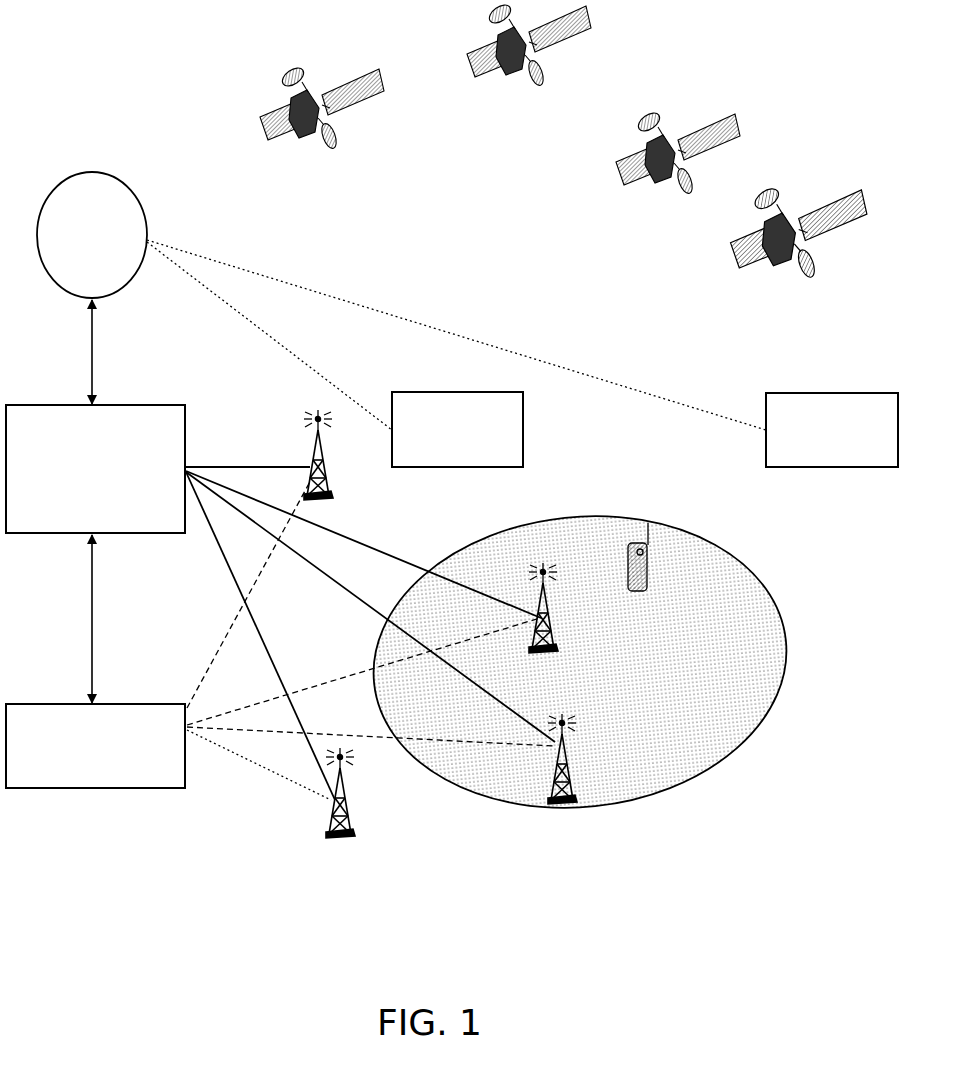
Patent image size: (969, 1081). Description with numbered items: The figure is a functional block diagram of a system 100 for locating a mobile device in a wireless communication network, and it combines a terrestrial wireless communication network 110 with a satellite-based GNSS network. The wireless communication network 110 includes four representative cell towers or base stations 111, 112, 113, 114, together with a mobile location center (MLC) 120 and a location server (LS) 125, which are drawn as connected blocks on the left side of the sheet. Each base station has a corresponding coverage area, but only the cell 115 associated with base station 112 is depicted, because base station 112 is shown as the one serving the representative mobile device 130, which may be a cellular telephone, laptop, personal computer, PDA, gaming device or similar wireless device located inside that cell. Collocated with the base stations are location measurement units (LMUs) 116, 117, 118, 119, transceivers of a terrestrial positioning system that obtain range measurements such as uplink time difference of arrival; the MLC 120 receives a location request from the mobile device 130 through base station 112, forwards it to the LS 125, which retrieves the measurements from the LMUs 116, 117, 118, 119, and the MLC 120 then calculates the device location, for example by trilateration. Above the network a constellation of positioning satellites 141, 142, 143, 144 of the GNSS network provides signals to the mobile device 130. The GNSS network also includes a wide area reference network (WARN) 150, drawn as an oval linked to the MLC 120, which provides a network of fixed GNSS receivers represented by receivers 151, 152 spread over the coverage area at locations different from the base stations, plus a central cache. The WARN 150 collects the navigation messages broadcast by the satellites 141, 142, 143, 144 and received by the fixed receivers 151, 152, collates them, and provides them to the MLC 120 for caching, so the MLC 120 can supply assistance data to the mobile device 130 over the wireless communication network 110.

The system 100 is at (128, 71).
The wireless communication network 110 is at (182, 612).
The base station 111 is at (295, 418).
The base station 112 is at (520, 574).
The base station 113 is at (581, 734).
The base station 114 is at (357, 765).
The cell 115 is at (725, 704).
The location measurement unit (LMU) 116 is at (305, 465).
The location measurement unit (LMU) 117 is at (521, 620).
The location measurement unit (LMU) 118 is at (577, 775).
The location measurement unit (LMU) 119 is at (352, 810).
The mobile location center (MLC) 120 is at (280, 602).
The location server (LS) 125 is at (279, 639).
The mobile device 130 is at (562, 597).
The positioning satellite 141 is at (324, 107).
The positioning satellite 142 is at (530, 44).
The positioning satellite 143 is at (680, 152).
The positioning satellite 144 is at (799, 239).
The wide area reference network (WARN) 150 is at (401, 301).
The fixed GNSS receiver 151 is at (457, 429).
The fixed GNSS receiver 152 is at (832, 430).